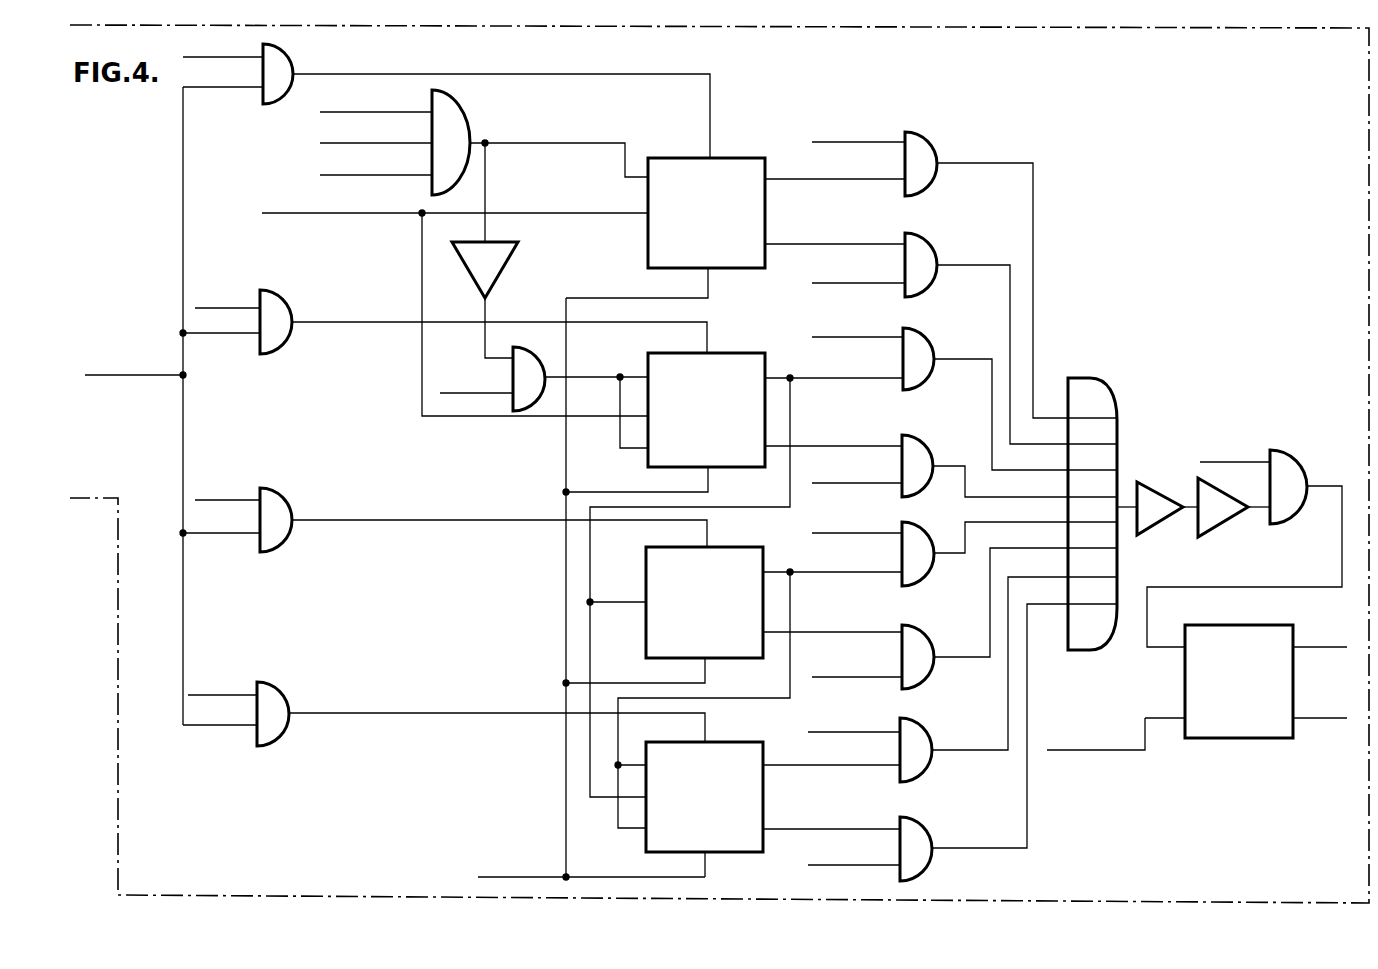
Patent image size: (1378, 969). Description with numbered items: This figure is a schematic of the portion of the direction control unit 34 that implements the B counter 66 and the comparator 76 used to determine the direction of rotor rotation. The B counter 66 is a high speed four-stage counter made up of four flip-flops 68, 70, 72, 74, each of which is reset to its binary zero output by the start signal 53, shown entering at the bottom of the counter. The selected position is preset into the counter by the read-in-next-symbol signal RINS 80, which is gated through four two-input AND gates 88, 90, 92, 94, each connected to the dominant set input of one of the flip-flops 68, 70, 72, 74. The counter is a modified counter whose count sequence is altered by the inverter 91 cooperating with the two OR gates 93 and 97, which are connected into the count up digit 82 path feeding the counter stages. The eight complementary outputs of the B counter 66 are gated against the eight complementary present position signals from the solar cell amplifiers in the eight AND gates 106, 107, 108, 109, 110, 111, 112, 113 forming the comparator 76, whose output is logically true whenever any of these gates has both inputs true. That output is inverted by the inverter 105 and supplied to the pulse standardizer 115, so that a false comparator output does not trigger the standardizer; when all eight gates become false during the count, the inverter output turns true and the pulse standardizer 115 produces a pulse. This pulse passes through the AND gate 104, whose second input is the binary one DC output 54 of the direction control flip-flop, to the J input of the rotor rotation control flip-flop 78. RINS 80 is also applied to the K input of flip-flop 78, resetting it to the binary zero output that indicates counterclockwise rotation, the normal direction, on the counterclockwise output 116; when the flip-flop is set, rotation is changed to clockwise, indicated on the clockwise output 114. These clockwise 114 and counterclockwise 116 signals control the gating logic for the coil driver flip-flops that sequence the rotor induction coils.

The direction control unit 34 is at (118, 640).
The start signal 53 is at (566, 762).
The DC signal level output 54 is at (1242, 460).
The B counter 66 is at (740, 144).
The flip-flop 68 is at (746, 272).
The flip-flop 70 is at (727, 470).
The flip-flop 72 is at (725, 660).
The flip-flop 74 is at (750, 855).
The comparator 76 is at (1076, 347).
The rotor rotation control flip-flop 78 is at (1228, 740).
The RINS 80 is at (183, 268).
The count up digit line 82 is at (383, 215).
The two-input AND gate 88 is at (292, 60).
The two-input AND gate 90 is at (290, 340).
The inverter 91 is at (512, 253).
The two-input AND gate 92 is at (288, 538).
The OR gate 93 is at (540, 365).
The two-input AND gate 94 is at (283, 735).
The OR gate 97 is at (466, 128).
The AND gate 104 is at (1296, 518).
The inverter 105 is at (1168, 519).
The AND gate 106 is at (930, 186).
The AND gate 107 is at (930, 288).
The AND gate 108 is at (926, 382).
The AND gate 109 is at (930, 447).
The AND gate 110 is at (928, 574).
The AND gate 111 is at (928, 675).
The AND gate 112 is at (926, 769).
The AND gate 113 is at (926, 868).
The CW signal 114 is at (1342, 651).
The pulse standardizer 115 is at (1230, 519).
The CCW signal 116 is at (1338, 722).